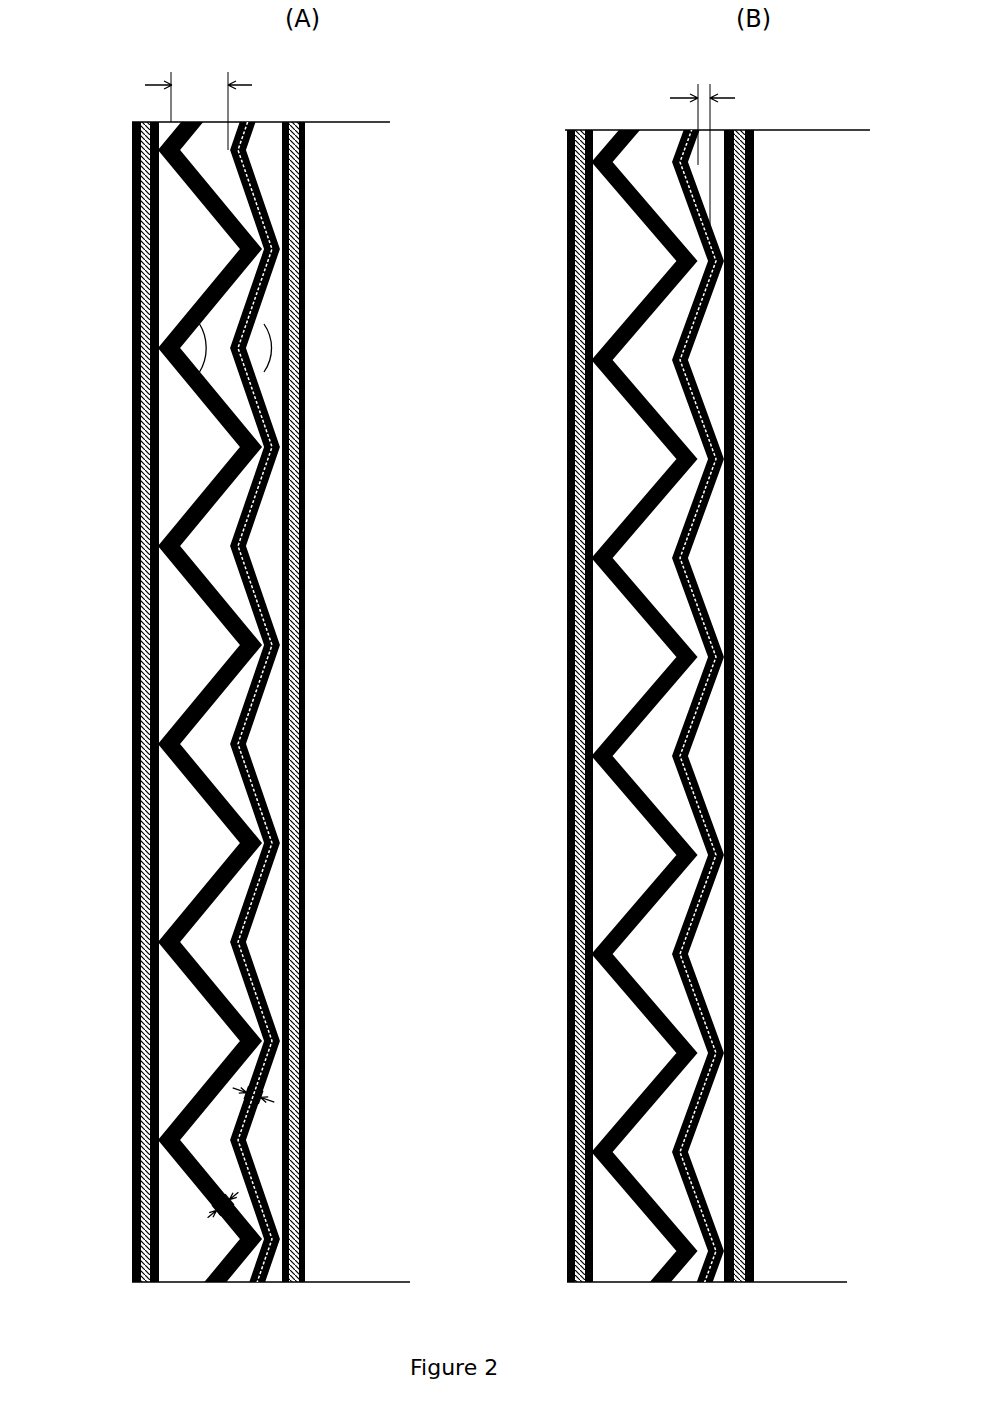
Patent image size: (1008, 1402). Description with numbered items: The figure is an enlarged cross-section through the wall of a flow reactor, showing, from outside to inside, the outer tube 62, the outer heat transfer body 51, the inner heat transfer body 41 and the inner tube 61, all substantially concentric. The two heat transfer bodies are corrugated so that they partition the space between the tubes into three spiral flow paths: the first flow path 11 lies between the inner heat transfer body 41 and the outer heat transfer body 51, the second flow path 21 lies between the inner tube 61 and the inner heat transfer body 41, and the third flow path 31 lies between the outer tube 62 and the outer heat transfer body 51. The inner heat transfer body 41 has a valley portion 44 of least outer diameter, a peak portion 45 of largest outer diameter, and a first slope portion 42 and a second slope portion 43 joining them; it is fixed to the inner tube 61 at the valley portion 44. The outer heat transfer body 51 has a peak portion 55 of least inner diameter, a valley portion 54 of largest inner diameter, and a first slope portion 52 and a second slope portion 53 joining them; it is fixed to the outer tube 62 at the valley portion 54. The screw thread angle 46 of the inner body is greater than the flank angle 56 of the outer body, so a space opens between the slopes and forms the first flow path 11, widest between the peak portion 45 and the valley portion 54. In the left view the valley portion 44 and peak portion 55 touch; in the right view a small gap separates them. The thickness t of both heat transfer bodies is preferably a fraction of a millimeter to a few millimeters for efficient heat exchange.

In FIG. 2A, the first flow path 11 is at (255, 933).
In FIG. 2A, the second flow path 21 is at (275, 967).
In FIG. 2A, the third flow path 31 is at (173, 882).
In FIG. 2A, the inner heat transfer body 41 is at (273, 403).
In FIG. 2B, the inner heat transfer body 41 is at (717, 310).
In FIG. 2A, the first slope portion 42 is at (270, 703).
In FIG. 2A, the second slope portion 43 is at (272, 795).
In FIG. 2A, the valley portion 44 is at (283, 643).
In FIG. 2B, the valley portion 44 is at (747, 248).
In FIG. 2A, the peak portion 45 is at (253, 745).
In FIG. 2A, the angle θ1 of screw thread 46 is at (304, 343).
In FIG. 2A, the outer heat transfer body 51 is at (200, 405).
In FIG. 2B, the outer heat transfer body 51 is at (627, 310).
In FIG. 2A, the first slope portion 52 is at (192, 697).
In FIG. 2A, the second slope portion 53 is at (203, 805).
In FIG. 2A, the valley portion 54 is at (143, 748).
In FIG. 2A, the peak portion 55 is at (237, 647).
In FIG. 2B, the peak portion 55 is at (695, 260).
In FIG. 2A, the angle θ2 formed by both flanks 56 is at (159, 272).
In FIG. 2A, the inner tube 61 is at (303, 474).
In FIG. 2B, the inner tube 61 is at (750, 347).
In FIG. 2A, the outer tube 62 is at (133, 487).
In FIG. 2B, the outer tube 62 is at (567, 342).
In FIG. 2A, the thickness t is at (209, 1217).